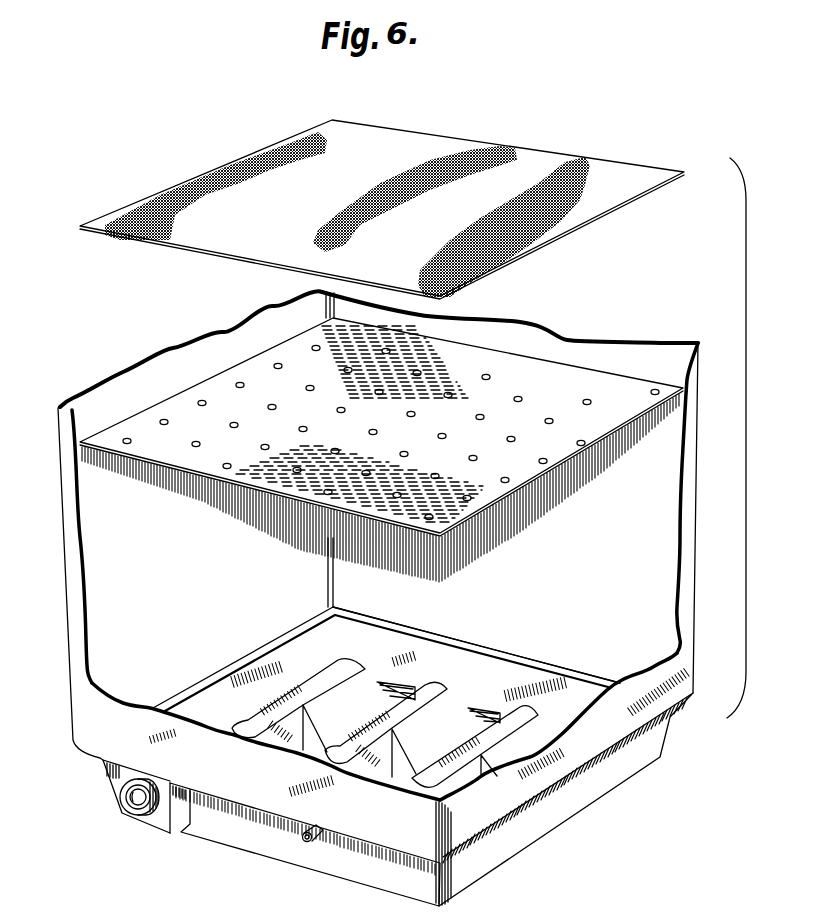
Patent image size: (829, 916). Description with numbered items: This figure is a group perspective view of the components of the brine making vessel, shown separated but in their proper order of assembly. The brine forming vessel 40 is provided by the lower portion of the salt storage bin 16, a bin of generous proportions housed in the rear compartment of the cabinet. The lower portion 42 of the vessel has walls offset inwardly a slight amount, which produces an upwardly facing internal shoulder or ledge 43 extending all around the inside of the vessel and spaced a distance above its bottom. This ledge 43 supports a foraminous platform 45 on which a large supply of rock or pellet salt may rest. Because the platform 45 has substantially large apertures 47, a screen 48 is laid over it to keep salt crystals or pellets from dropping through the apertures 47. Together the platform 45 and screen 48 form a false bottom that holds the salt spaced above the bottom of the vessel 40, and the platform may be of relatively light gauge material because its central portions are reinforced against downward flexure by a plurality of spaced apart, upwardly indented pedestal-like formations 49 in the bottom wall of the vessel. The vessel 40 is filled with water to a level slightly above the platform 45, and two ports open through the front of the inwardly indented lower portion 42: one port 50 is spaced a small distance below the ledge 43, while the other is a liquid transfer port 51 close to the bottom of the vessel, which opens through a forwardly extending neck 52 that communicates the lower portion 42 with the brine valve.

The salt storage bin 16 is at (122, 390).
The brine forming vessel 40 is at (232, 683).
The lower portion of the vessel 42 is at (572, 803).
The internal shoulder or ledge 43 is at (510, 657).
The foraminous platform 45 is at (503, 367).
The apertures 47 is at (265, 478).
The screen 48 is at (523, 150).
The pedestal-like formations 49 is at (428, 694).
The port 50 is at (308, 842).
The liquid transfer port 51 is at (132, 812).
The forwardly extending neck 52 is at (127, 780).